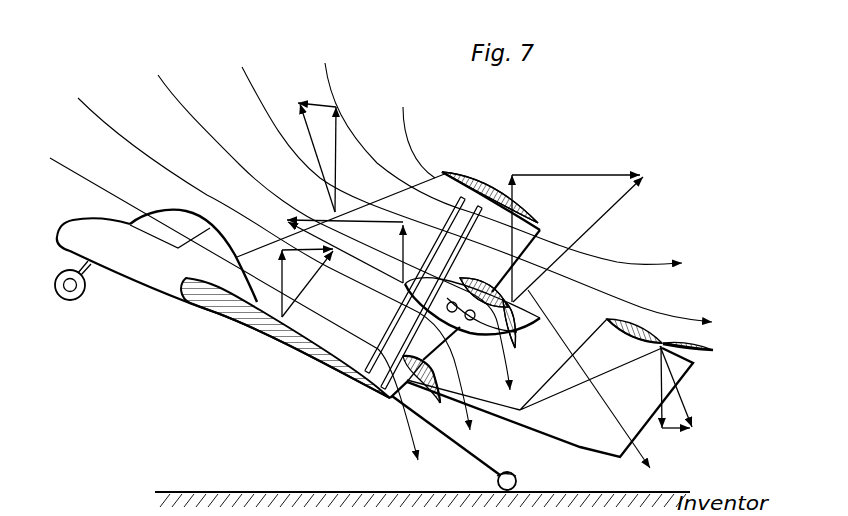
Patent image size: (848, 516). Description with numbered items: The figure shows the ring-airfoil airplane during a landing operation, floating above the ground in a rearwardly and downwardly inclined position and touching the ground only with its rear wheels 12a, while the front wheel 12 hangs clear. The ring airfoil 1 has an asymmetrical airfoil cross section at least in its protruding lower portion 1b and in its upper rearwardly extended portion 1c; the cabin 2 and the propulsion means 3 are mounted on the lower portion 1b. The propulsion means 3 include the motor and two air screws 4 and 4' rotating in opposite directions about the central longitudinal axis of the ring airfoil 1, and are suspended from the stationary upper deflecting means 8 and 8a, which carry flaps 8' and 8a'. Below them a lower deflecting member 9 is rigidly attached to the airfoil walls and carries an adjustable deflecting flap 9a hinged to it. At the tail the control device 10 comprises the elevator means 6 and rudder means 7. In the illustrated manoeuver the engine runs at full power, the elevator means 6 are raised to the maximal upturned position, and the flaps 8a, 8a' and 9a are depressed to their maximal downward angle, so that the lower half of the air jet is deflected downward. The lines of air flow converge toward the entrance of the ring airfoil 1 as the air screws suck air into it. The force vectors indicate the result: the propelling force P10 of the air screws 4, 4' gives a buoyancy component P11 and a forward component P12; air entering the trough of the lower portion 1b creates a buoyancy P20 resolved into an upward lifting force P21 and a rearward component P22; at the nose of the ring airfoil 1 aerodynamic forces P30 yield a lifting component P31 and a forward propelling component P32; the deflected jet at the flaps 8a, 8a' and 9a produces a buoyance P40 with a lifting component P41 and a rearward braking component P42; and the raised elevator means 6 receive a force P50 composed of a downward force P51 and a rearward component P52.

The ring airfoil 1 is at (442, 165).
The protruding lower portion 1b is at (270, 334).
The upper rearwardly extended portion 1c is at (480, 184).
The cabin 2 is at (133, 240).
The propulsion means 3 is at (479, 328).
The air screw 4 is at (415, 285).
The air screw 4' is at (440, 297).
The elevator means 6 is at (698, 351).
The rudder means 7 is at (617, 440).
The upper deflecting means 8 is at (484, 292).
The flap 8' is at (484, 279).
The upper deflecting means 8a is at (509, 324).
The flap 8a' is at (557, 323).
The lower deflecting member 9 is at (394, 396).
The adjustable deflecting flap 9a is at (440, 407).
The control device 10 is at (674, 336).
The front wheel 12 is at (78, 298).
The rear wheel 12a is at (519, 483).
The propelling force P10 is at (345, 252).
The buoyancy component P11 is at (418, 254).
The horizontally forwardly directed component P12 is at (345, 215).
The buoyancy component P20 is at (307, 284).
The lifting force P21 is at (275, 283).
The rearwardly directed force component P22 is at (307, 242).
The aerodynamic forces P30 is at (313, 158).
The lifting component P31 is at (350, 159).
The horizontally forwardly propelling component P32 is at (317, 93).
The aerodynamic buoyance P40 is at (578, 239).
The lifting component P41 is at (527, 238).
The braking component P42 is at (576, 169).
The force P50 is at (685, 386).
The vertically downwardly acting force P51 is at (652, 387).
The horizontally rearwardly acting component P52 is at (677, 441).